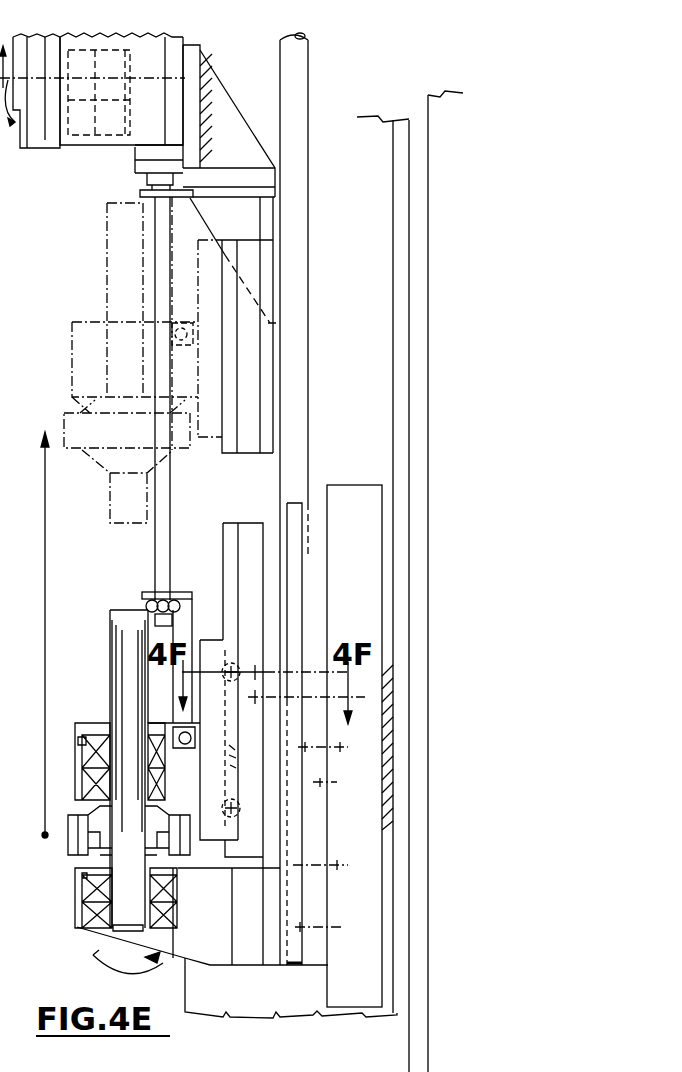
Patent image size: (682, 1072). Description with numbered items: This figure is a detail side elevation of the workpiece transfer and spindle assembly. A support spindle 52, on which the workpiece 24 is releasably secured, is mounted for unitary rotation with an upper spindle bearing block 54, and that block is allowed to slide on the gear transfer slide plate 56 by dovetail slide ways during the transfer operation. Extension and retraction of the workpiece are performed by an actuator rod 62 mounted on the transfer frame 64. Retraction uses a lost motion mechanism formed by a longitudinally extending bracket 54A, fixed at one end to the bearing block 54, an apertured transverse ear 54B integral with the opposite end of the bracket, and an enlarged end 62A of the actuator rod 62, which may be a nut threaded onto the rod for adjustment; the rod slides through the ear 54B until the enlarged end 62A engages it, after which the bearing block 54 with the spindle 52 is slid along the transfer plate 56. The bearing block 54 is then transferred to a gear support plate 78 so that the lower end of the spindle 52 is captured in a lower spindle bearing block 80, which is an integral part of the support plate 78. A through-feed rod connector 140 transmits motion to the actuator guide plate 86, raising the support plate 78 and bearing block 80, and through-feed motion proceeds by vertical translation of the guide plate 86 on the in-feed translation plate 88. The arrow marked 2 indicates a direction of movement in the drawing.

The axis of movement 2 is at (26, 635).
The workpiece 24 is at (67, 843).
The support spindle 52 is at (127, 668).
The upper spindle bearing block 54 is at (77, 760).
The longitudinally extending bracket 54A is at (182, 623).
The apertured transverse ear 54B is at (152, 592).
The gear transfer slide plate 56 is at (192, 65).
The actuator rod 62 is at (157, 550).
The enlarged end 62A is at (147, 612).
The transfer frame 64 is at (245, 390).
The gear support plate 78 is at (248, 535).
The lower spindle bearing block 80 is at (77, 895).
The actuator guide plate 86 is at (312, 1071).
The in-feed translation plate 88 is at (371, 578).
The through-feed rod connector 140 is at (287, 232).